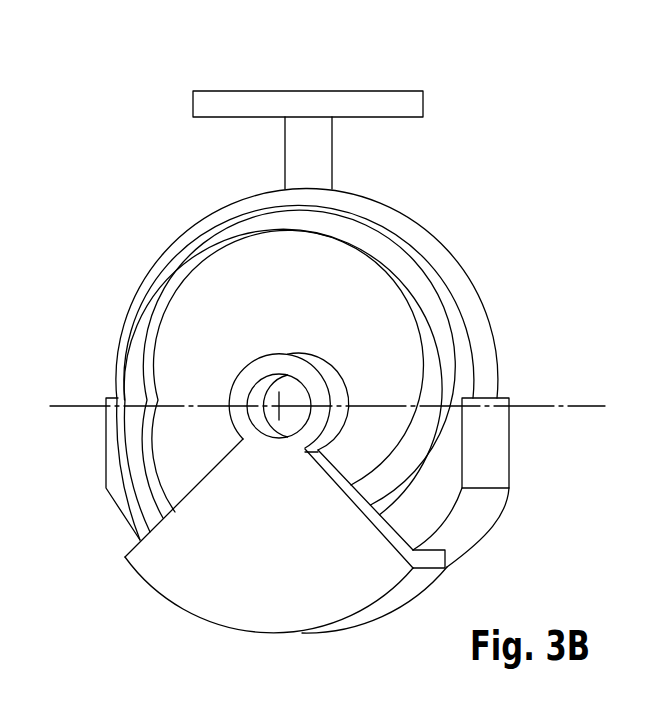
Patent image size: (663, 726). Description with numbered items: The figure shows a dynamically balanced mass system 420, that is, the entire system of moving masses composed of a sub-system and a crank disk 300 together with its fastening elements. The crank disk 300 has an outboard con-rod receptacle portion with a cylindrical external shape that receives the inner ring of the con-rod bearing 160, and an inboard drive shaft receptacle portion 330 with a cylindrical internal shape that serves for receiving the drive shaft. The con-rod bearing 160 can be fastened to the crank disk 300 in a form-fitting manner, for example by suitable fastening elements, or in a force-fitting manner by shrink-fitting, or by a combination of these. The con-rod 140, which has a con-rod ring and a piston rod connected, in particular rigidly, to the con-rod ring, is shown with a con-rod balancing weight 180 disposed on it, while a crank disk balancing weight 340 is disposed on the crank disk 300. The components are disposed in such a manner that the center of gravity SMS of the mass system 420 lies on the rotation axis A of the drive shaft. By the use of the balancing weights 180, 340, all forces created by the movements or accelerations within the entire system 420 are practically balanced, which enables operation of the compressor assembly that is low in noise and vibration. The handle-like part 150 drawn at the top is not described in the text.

The handle bar 150 is at (314, 100).
The mass system 420 is at (524, 147).
The con-rod 140 is at (228, 174).
The con-rod bearing 160 is at (230, 233).
The crank disk 300 is at (243, 290).
The inboard drive shaft receptacle portion 330 is at (216, 375).
The con-rod balancing weight 180 is at (115, 478).
The crank disk balancing weight 340 is at (175, 585).
The center of gravity SMS is at (297, 432).
The rotation axis A is at (552, 398).